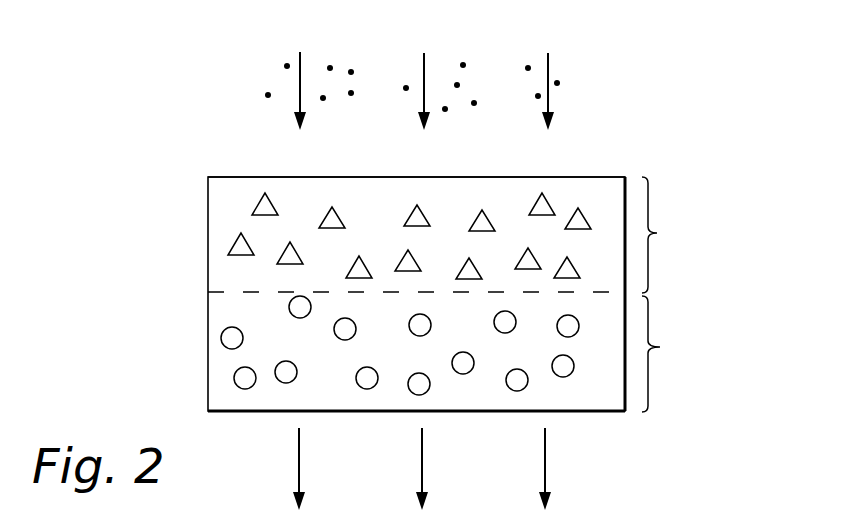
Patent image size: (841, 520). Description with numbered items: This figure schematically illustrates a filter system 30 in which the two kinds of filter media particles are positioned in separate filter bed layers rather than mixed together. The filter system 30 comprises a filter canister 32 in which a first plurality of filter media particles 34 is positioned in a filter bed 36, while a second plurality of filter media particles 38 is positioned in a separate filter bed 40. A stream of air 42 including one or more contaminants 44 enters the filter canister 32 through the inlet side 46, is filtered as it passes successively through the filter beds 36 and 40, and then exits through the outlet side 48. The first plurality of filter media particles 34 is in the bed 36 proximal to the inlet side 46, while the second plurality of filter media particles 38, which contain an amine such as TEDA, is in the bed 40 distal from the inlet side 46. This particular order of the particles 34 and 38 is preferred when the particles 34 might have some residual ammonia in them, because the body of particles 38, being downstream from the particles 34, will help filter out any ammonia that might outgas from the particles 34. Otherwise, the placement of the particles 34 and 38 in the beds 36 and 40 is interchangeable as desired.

The filter system 30 is at (155, 83).
The filter canister 32 is at (207, 305).
The first plurality of filter media particles 34 is at (352, 268).
The filter bed 36 is at (666, 235).
The second plurality of filter media particles 38 is at (300, 307).
The filter bed 40 is at (670, 354).
The stream of air 42 is at (423, 70).
The contaminants 44 is at (266, 93).
The inlet side 46 is at (578, 177).
The outlet side 48 is at (577, 413).